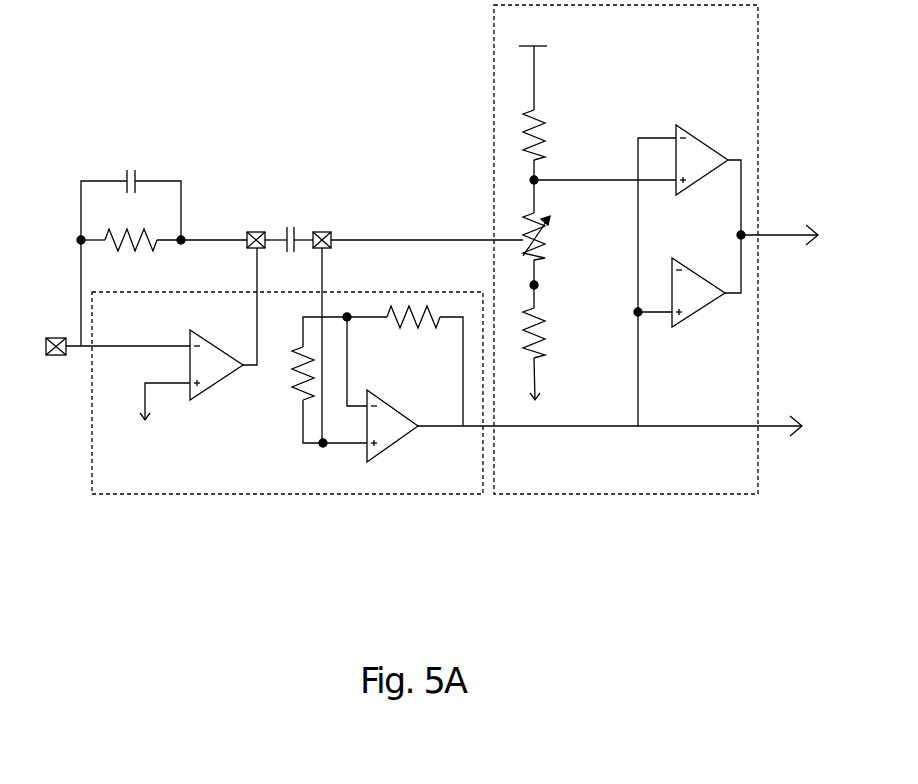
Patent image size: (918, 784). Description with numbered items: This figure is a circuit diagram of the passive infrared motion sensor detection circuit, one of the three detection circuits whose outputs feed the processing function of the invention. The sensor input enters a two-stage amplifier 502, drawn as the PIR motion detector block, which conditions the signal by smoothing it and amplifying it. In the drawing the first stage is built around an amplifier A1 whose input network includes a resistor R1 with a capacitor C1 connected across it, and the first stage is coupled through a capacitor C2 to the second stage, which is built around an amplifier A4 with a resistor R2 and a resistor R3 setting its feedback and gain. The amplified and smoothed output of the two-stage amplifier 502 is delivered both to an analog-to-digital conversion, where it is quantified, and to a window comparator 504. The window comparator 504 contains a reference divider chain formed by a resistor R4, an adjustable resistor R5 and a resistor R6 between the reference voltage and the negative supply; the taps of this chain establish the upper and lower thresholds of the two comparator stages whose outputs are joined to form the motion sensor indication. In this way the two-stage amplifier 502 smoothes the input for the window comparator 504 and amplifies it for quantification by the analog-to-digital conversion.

The two-stage amplifier 502 is at (153, 495).
The window comparator 504 is at (573, 495).
The capacitor C1 is at (131, 195).
The resistor R1 is at (164, 229).
The capacitor C2 is at (289, 228).
The amplifier A1 is at (216, 359).
The resistor R2 is at (315, 380).
The resistor R3 is at (405, 366).
The amplifier A4 is at (395, 425).
The resistor R4 is at (550, 135).
The variable resistor R5 is at (551, 236).
The resistor R6 is at (551, 333).